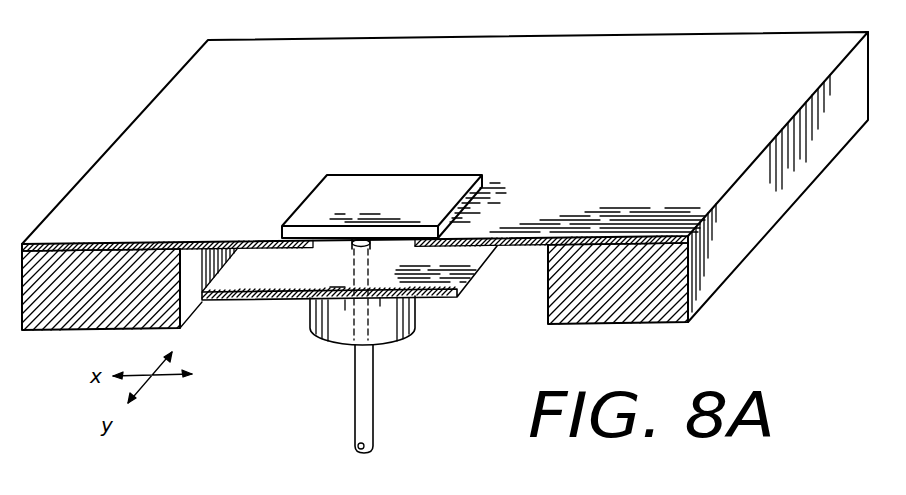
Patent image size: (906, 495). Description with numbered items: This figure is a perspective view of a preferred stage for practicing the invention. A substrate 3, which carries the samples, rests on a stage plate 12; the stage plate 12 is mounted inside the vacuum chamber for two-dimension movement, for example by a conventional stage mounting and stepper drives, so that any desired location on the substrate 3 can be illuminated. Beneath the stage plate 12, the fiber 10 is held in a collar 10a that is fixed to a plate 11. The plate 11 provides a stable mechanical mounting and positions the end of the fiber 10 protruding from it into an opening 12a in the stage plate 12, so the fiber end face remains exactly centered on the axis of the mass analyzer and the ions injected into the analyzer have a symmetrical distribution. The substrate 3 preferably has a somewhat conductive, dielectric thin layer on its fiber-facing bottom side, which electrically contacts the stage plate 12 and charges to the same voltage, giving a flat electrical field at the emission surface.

The substrate 3 is at (324, 194).
The fiber 10 is at (366, 395).
The collar 10a is at (402, 335).
The plate 11 is at (267, 300).
The stage plate 12 is at (730, 253).
The opening 12a is at (460, 292).